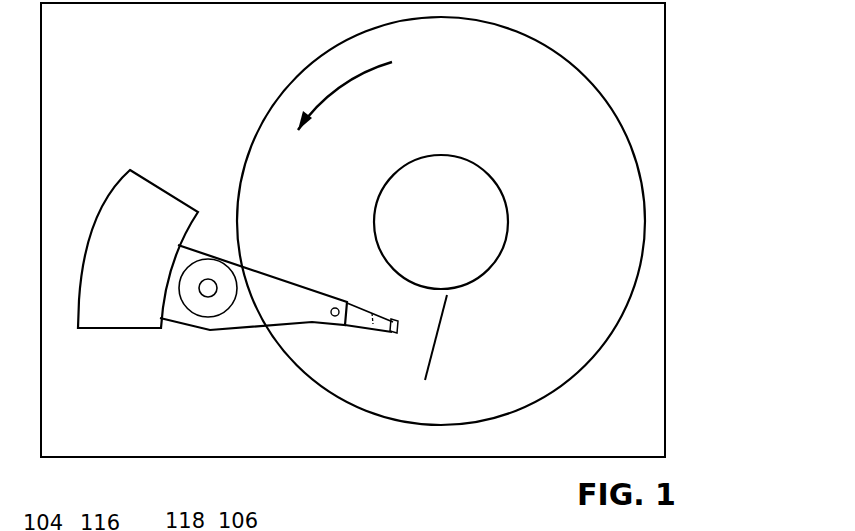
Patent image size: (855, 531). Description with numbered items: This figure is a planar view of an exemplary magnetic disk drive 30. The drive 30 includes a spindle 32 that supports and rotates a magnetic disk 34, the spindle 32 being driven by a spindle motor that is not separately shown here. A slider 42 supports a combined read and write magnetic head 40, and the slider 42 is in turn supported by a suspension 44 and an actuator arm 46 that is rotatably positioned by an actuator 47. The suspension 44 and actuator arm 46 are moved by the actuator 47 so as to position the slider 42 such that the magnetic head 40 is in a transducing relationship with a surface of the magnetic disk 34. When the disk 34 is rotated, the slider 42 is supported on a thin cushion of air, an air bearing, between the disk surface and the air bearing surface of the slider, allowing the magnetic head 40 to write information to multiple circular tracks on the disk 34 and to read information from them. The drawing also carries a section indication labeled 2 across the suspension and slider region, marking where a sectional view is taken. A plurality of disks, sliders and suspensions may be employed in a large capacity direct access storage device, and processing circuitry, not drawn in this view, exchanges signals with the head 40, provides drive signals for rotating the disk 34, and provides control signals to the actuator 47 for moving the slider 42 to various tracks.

The magnetic disk drive 30 is at (682, 40).
The spindle 32 is at (479, 170).
The magnetic disk 34 is at (588, 243).
The magnetic head 40 is at (398, 327).
The slider 42 is at (397, 322).
The suspension 44 is at (353, 330).
The actuator arm 46 is at (297, 290).
The actuator 47 is at (172, 199).
The section line 2- 2 is at (450, 304).